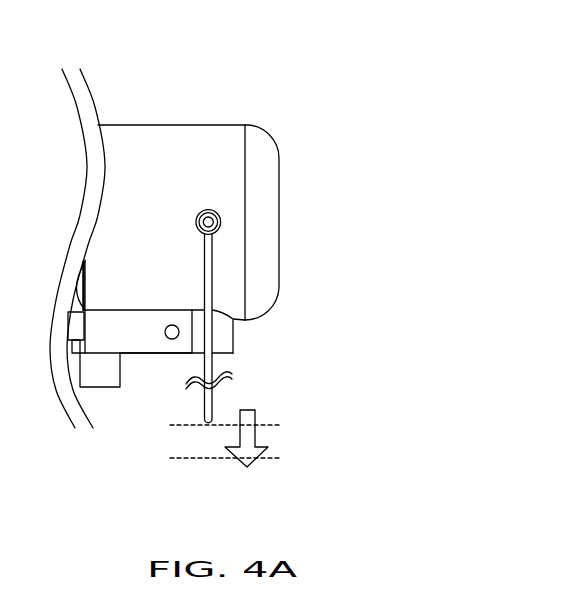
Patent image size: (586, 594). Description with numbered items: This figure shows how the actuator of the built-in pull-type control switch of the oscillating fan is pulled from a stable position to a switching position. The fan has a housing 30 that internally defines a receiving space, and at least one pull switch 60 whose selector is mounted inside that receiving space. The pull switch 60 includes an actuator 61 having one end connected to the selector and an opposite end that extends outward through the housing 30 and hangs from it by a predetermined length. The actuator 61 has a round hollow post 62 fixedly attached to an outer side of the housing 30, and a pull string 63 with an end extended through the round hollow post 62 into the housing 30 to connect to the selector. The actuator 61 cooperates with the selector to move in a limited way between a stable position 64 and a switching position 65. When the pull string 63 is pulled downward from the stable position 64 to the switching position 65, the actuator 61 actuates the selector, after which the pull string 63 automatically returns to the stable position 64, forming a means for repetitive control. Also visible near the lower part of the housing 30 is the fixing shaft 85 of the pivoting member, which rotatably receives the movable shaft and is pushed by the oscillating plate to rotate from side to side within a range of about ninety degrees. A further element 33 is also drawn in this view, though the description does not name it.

The housing 30 is at (193, 124).
The plate 33 is at (150, 354).
The pull switch 60 is at (279, 287).
The actuator 61 is at (213, 300).
The round hollow post 62 is at (287, 213).
The pull string 63 is at (213, 360).
The stable position 64 is at (283, 423).
The switching position 65 is at (283, 458).
The fixing shaft 85 is at (100, 387).